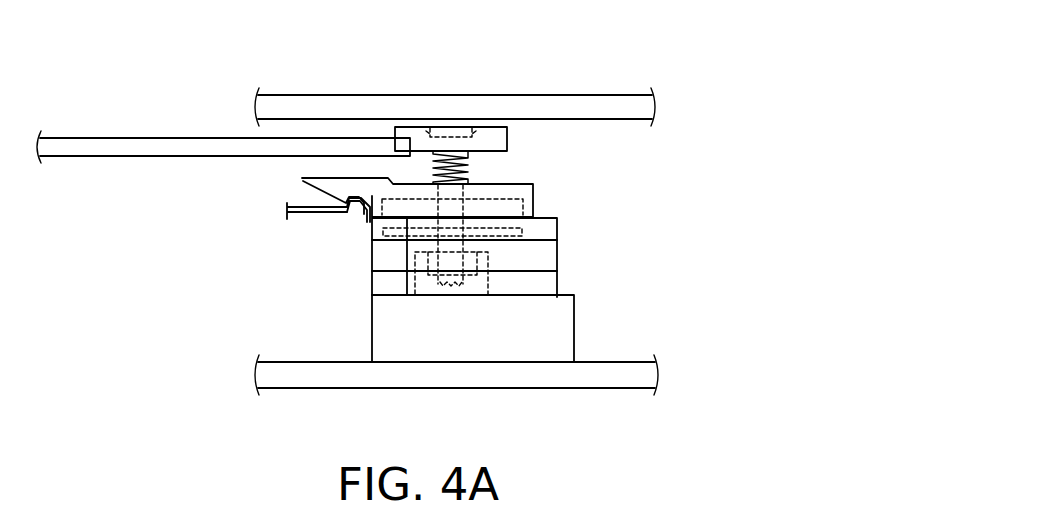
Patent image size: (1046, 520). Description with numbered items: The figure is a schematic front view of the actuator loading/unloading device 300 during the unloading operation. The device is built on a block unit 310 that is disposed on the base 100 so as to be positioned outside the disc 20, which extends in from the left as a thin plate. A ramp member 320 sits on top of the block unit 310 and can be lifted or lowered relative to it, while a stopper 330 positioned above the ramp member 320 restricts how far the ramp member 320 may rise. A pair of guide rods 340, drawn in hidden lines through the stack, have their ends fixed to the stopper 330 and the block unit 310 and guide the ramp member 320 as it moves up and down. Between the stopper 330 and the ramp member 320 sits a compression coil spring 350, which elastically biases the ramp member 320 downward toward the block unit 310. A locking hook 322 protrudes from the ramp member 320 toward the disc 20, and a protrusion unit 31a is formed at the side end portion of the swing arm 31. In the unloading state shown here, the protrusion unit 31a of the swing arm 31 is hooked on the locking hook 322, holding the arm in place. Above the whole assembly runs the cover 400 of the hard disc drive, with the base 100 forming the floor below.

The disc 20 is at (89, 148).
The swing arm 31 is at (306, 213).
The protrusion unit 31a is at (352, 214).
The base 100 is at (549, 377).
The actuator loading/unloading device 300 is at (642, 225).
The block unit 310 is at (545, 257).
The ramp member 320 is at (535, 200).
The locking hook 322 is at (300, 180).
The stopper 330 is at (495, 138).
The guide rods 340 is at (447, 247).
The compression coil spring 350 is at (470, 170).
The cover 400 is at (578, 103).